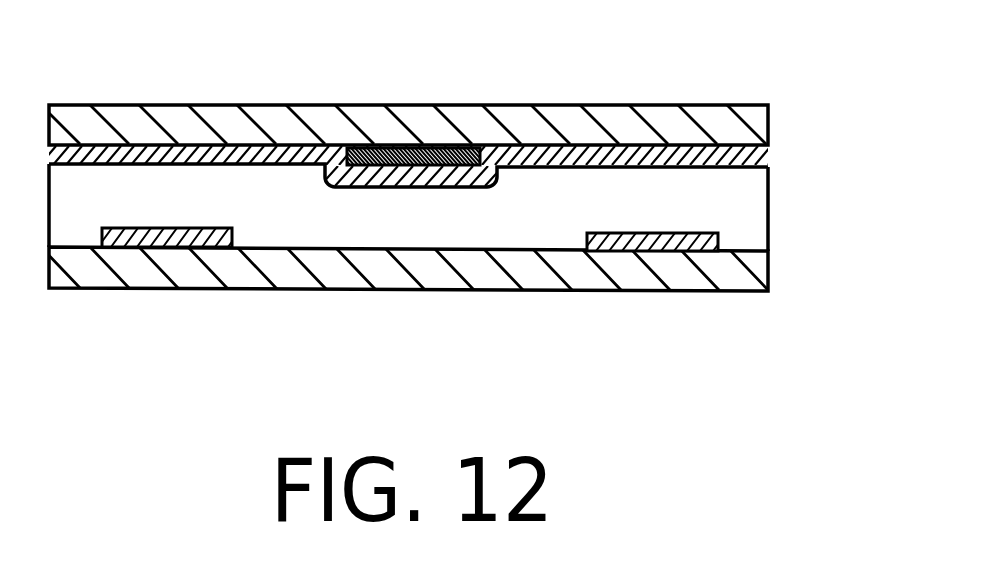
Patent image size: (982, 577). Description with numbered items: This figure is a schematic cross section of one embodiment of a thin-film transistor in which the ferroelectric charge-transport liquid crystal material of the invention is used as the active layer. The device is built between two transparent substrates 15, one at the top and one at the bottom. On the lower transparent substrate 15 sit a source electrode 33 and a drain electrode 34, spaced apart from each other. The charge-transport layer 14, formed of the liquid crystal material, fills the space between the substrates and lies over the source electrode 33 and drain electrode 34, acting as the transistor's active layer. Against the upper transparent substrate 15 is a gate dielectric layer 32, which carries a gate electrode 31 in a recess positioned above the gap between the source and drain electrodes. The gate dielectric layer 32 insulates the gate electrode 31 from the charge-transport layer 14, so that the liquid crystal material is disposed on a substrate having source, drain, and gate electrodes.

The charge-transport layer 14 is at (402, 233).
The transparent substrate 15 is at (752, 124).
The gate electrode 31 is at (417, 147).
The gate dielectric layer 32 is at (657, 157).
The source electrode 33 is at (142, 250).
The drain electrode 34 is at (642, 253).